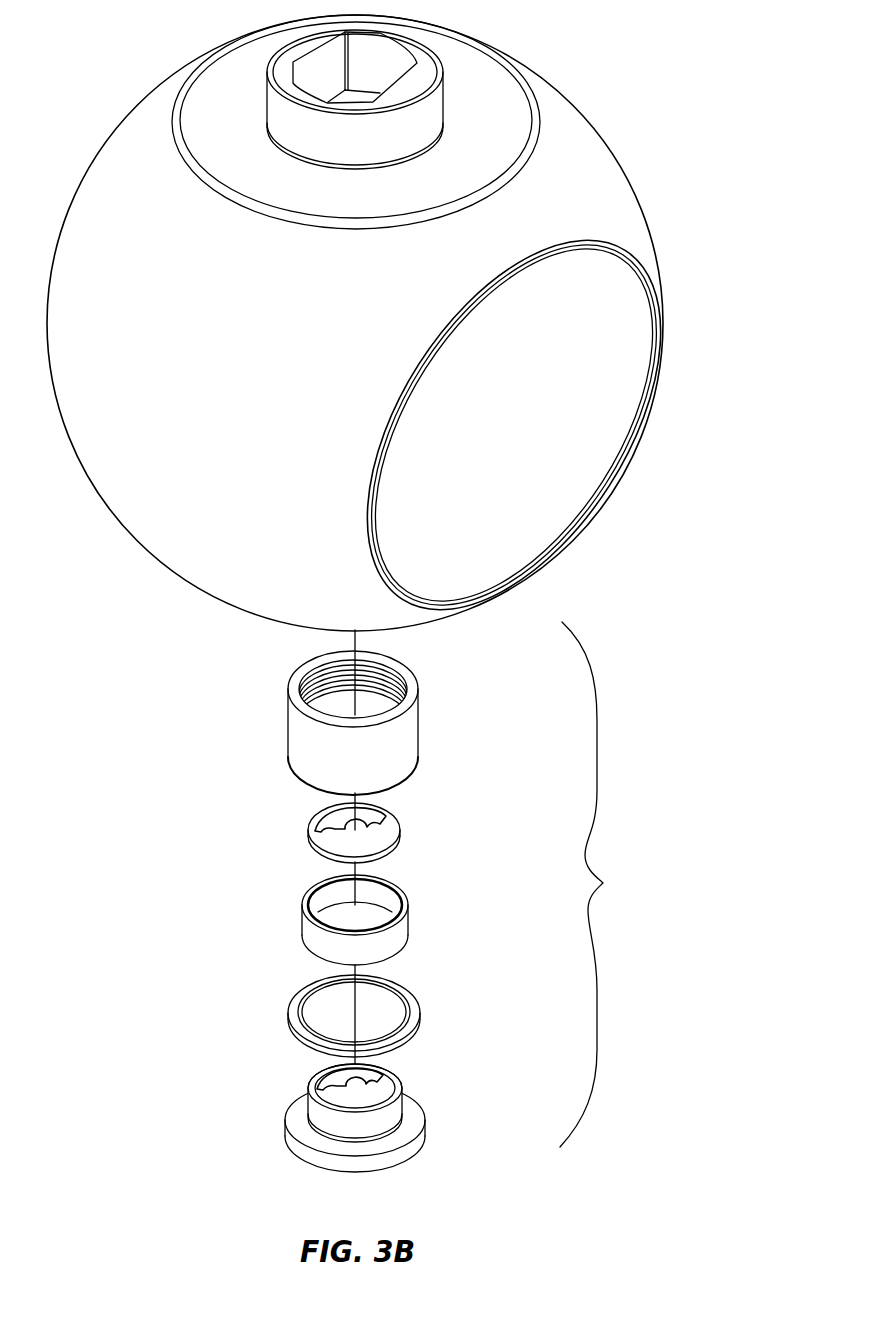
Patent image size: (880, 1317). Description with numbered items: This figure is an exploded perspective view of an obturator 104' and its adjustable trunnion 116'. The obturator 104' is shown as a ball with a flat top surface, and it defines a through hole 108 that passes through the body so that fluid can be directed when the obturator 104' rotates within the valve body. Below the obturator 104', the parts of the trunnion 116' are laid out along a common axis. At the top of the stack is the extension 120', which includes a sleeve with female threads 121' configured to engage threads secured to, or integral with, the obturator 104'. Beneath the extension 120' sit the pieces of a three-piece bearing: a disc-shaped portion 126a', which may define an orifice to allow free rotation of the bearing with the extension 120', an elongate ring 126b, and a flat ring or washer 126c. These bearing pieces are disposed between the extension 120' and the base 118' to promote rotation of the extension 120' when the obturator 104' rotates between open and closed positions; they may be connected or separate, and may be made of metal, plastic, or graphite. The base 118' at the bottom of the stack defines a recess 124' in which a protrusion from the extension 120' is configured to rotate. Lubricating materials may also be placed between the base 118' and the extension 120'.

The obturator 104' is at (389, 323).
The through hole 108 is at (587, 440).
The trunnion 116' is at (606, 884).
The base 118' is at (409, 1118).
The extension 120' is at (414, 723).
The threads 121' is at (419, 697).
The recess 124' is at (291, 1080).
The disc-shaped portion 126a' is at (424, 832).
The elongate ring 126b is at (407, 922).
The flat ring or washer 126c is at (420, 1012).